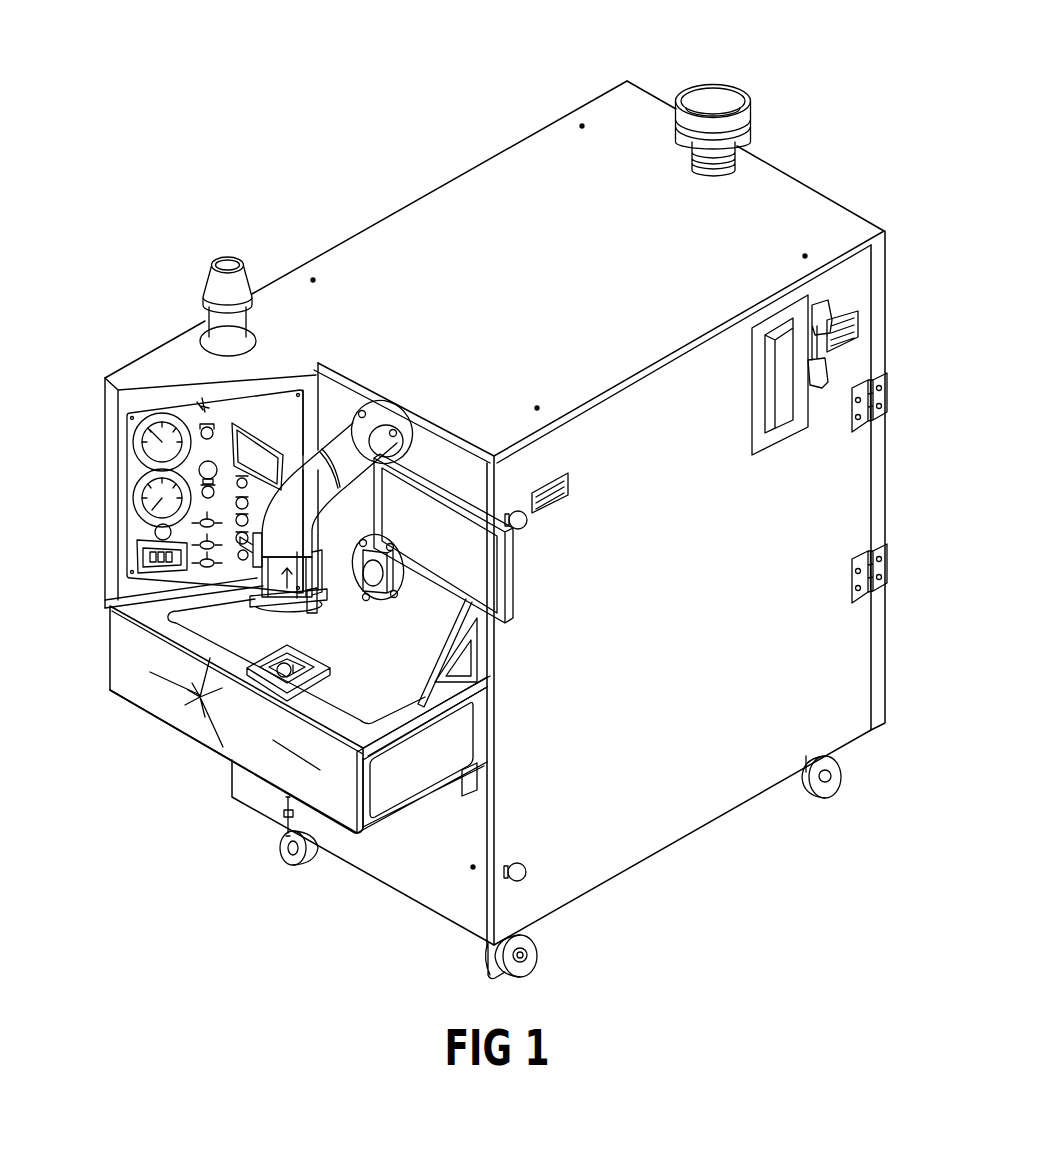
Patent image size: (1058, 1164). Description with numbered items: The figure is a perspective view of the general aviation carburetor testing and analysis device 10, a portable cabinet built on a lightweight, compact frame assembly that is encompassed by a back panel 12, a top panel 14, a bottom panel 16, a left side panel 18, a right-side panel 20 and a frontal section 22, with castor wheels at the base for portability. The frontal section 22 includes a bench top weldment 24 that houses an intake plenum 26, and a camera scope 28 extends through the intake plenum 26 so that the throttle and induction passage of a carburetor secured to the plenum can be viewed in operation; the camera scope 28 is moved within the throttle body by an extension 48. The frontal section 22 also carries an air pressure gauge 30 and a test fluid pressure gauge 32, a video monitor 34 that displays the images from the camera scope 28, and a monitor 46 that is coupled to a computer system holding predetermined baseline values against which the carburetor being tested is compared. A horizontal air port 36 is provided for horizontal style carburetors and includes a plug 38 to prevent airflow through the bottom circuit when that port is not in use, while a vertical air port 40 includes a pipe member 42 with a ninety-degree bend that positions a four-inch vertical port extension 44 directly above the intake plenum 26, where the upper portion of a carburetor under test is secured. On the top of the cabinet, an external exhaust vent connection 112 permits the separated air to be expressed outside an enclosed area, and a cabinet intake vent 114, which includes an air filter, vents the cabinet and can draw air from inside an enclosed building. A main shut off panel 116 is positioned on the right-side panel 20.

The general aviation carburetor testing and analysis device 10 is at (792, 138).
The back panel 12 is at (892, 255).
The top panel 14 is at (625, 128).
The bottom panel 16 is at (724, 826).
The left side panel 18 is at (392, 205).
The right-side panel 20 is at (818, 485).
The frontal section 22 is at (440, 858).
The bench top weldment 24 is at (152, 717).
The intake plenum 26 is at (267, 650).
The camera scope 28 is at (303, 660).
The air pressure gauge 30 is at (133, 440).
The test fluid pressure gauge 32 is at (133, 495).
The video monitor 34 is at (300, 391).
The horizontal air port 36 is at (393, 580).
The plug 38 is at (372, 582).
The vertical air port 40 is at (385, 417).
The pipe member 42 is at (295, 497).
The vertical port extension 44 is at (105, 600).
The monitor 46 is at (505, 575).
The extension 48 is at (283, 818).
The external exhaust vent connection 112 is at (735, 84).
The cabinet intake vent 114 is at (230, 255).
The main shut off panel 116 is at (785, 425).